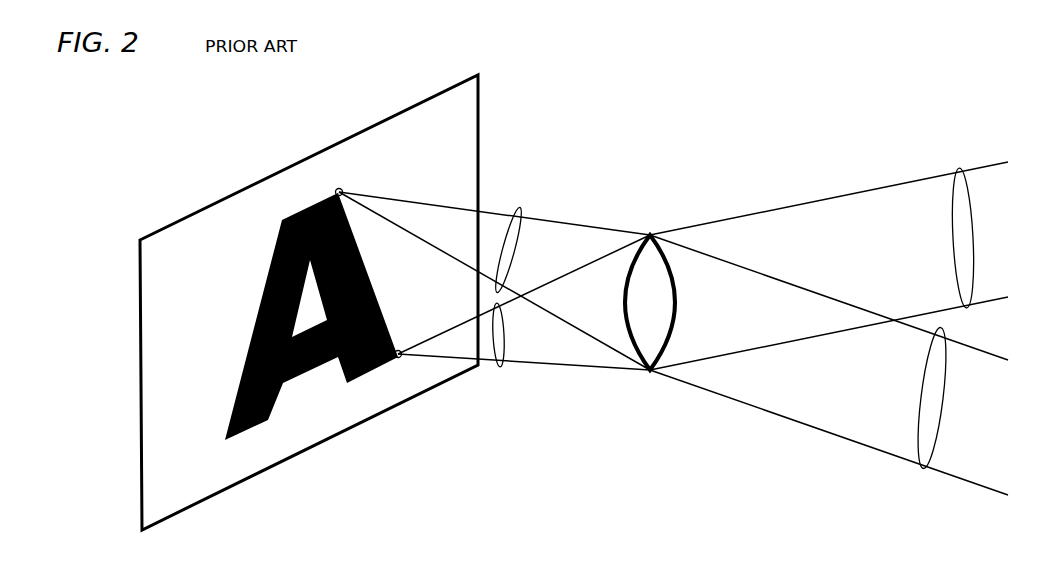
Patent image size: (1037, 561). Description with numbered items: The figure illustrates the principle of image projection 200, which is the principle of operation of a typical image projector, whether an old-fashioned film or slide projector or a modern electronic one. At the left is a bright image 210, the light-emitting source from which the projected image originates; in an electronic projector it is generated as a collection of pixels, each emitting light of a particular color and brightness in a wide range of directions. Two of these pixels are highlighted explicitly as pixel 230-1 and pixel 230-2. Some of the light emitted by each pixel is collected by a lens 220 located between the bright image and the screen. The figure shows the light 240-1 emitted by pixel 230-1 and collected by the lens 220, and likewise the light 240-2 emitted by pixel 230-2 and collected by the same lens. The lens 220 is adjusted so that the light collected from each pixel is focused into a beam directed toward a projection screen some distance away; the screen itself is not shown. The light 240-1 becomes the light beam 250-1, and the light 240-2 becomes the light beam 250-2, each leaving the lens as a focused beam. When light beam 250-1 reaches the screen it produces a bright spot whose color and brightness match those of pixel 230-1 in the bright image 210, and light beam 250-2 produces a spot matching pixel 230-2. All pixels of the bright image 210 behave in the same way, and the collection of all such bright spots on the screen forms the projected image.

The principle of image projection 200 is at (303, 82).
The bright image 210 is at (204, 208).
The lens 220 is at (670, 318).
The pixel 230-1 is at (342, 190).
The pixel 230-2 is at (400, 350).
The light 240-1 is at (520, 207).
The light 240-2 is at (499, 368).
The light beam 250-1 is at (923, 470).
The light beam 250-2 is at (959, 170).